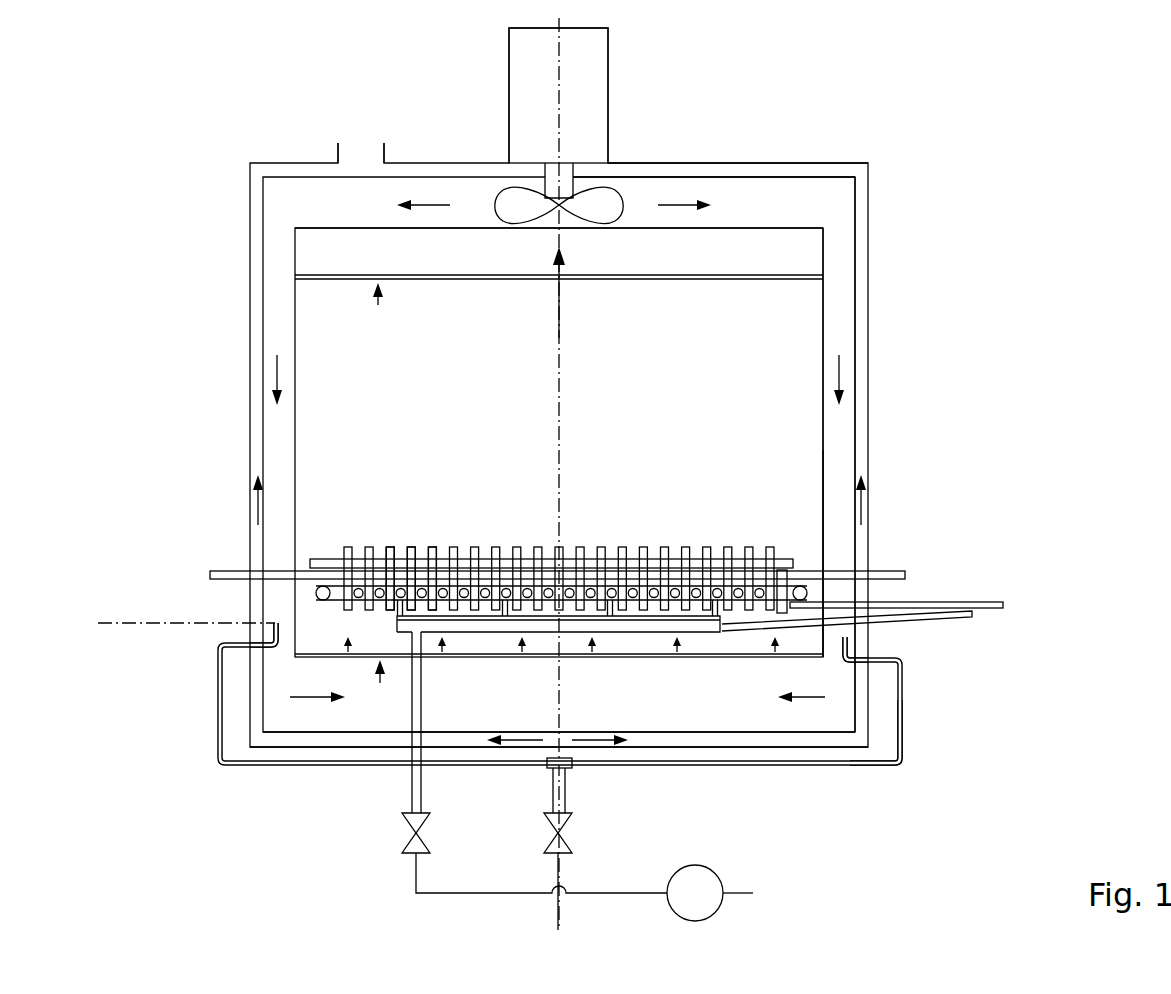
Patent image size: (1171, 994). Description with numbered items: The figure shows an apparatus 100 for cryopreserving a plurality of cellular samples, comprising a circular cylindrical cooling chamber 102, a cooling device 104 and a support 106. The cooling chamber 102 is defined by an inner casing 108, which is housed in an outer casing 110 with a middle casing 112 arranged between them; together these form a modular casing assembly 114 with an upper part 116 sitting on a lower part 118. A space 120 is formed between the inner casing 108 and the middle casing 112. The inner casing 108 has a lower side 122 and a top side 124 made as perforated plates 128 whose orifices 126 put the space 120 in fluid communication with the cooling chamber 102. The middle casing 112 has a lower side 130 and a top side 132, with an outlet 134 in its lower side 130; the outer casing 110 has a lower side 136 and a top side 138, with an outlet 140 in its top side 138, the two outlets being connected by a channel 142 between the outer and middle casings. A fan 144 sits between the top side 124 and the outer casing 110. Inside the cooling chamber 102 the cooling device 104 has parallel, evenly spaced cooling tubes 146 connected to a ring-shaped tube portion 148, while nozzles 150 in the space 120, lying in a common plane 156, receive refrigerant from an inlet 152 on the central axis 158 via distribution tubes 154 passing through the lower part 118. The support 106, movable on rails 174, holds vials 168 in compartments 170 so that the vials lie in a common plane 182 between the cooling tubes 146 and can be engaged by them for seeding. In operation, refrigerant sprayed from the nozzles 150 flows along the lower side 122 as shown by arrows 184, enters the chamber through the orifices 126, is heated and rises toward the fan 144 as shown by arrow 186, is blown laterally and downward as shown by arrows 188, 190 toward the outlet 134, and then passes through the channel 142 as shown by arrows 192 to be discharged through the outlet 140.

The apparatus 100 is at (1036, 210).
The cooling chamber 102 is at (681, 404).
The cooling device 104 is at (714, 912).
The support 106 is at (977, 592).
The inner casing 108 is at (833, 322).
The outer casing 110 is at (876, 196).
The middle casing 112 is at (862, 255).
The modular casing assembly 114 is at (1066, 525).
The upper part 116 is at (870, 462).
The lower part 118 is at (878, 706).
The space 120 is at (828, 420).
The lower side 122 is at (660, 658).
The top side 124 is at (770, 227).
The orifices 126 is at (478, 282).
The perforated plates 128 is at (378, 306).
The lower side 130 is at (750, 748).
The top side 132 is at (727, 176).
The outlet 134 is at (558, 730).
The lower side 136 is at (845, 765).
The top side 138 is at (808, 162).
The outlet 140 is at (352, 148).
The channel 142 is at (866, 545).
The fan 144 is at (505, 195).
The cooling tubes 146 is at (718, 546).
The ring-shaped tube portion 148 is at (315, 559).
The nozzles 150 is at (275, 612).
The inlet 152 is at (567, 768).
The distribution tubes 154 is at (255, 766).
The common plane 156 is at (168, 623).
The central axis 158 is at (563, 68).
The vials 168 is at (428, 546).
The compartments 170 is at (518, 558).
The rails 174 is at (783, 569).
The common plane 182 is at (210, 575).
The arrows 184 is at (315, 700).
The arrow 186 is at (563, 303).
The arrows 188 is at (418, 198).
The arrows 190 is at (275, 372).
The arrows 192 is at (256, 505).